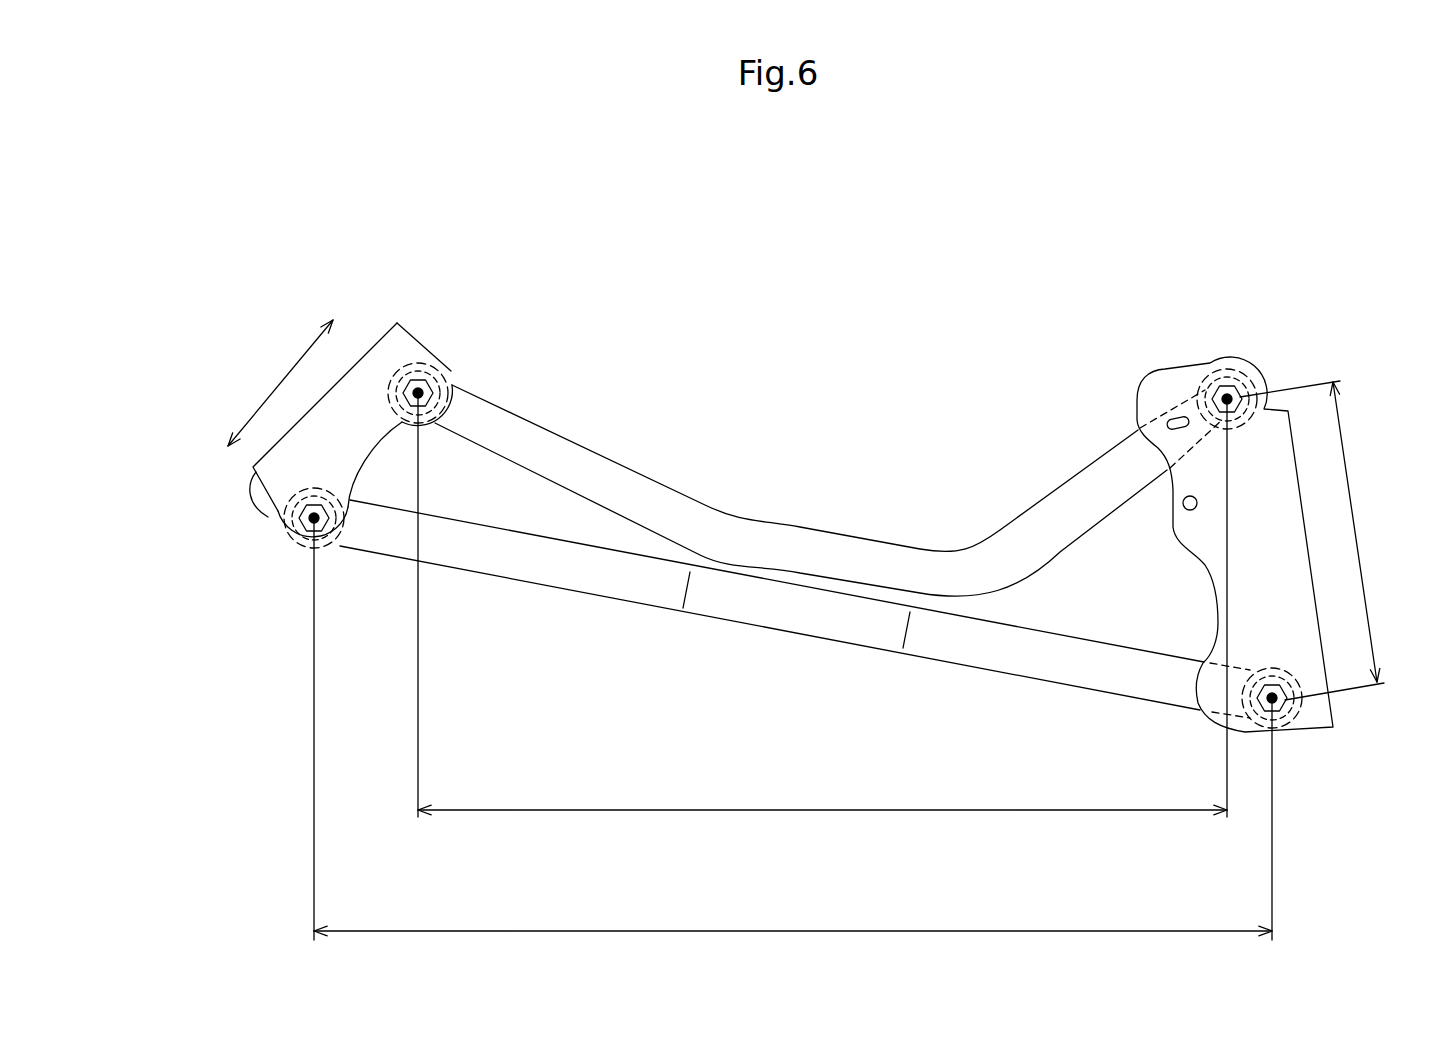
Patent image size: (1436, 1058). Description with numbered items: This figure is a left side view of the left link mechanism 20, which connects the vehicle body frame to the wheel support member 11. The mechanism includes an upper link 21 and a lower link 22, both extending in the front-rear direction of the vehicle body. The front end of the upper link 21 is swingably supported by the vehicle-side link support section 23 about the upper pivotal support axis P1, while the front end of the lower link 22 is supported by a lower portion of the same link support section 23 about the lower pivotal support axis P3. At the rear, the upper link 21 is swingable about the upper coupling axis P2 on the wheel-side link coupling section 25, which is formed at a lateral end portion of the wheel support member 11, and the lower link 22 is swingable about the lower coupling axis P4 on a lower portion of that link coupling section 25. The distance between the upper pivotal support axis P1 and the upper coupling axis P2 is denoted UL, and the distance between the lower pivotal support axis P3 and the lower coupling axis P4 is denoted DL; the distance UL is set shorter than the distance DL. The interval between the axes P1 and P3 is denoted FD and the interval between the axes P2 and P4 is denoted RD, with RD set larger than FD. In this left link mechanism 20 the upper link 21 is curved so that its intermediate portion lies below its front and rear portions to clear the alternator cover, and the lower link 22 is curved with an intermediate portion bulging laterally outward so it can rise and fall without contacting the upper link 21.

The link mechanism 20 is at (1183, 218).
The upper link 21 is at (613, 470).
The lower link 22 is at (598, 582).
The link support section 23 is at (401, 336).
The link coupling section 25 is at (1147, 393).
The wheel support member 11 is at (1185, 506).
The upper pivotal support axis P1 is at (438, 372).
The upper coupling axis P2 is at (1211, 362).
The lower pivotal support axis P3 is at (292, 534).
The lower coupling axis P4 is at (1288, 703).
The interval between upper and lower pivotal support axes FD is at (280, 383).
The interval between upper and lower coupling axes RD is at (1320, 540).
The distance between upper pivotal support axis and upper coupling axis UL is at (822, 605).
The distance between lower pivotal support axis and lower coupling axis DL is at (793, 729).